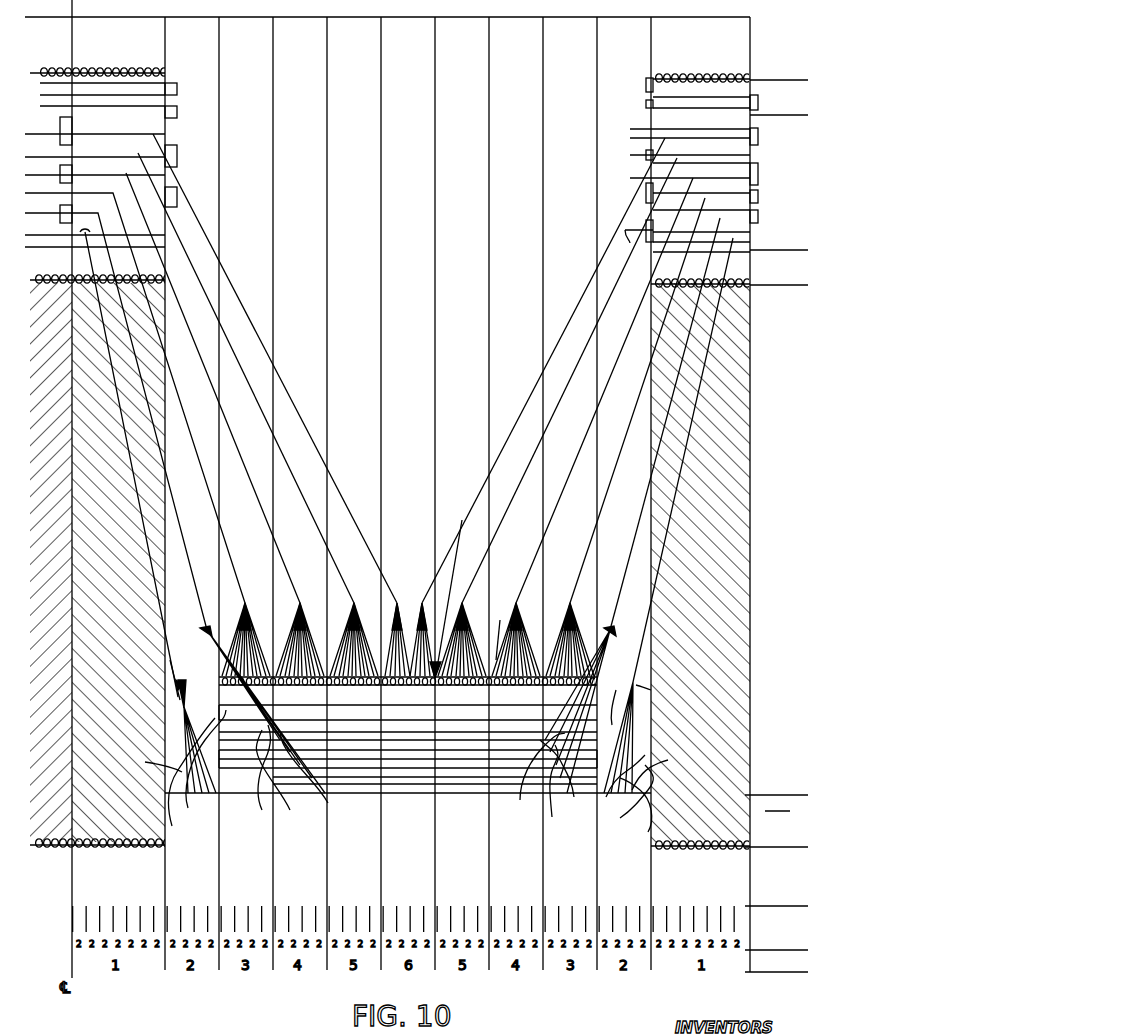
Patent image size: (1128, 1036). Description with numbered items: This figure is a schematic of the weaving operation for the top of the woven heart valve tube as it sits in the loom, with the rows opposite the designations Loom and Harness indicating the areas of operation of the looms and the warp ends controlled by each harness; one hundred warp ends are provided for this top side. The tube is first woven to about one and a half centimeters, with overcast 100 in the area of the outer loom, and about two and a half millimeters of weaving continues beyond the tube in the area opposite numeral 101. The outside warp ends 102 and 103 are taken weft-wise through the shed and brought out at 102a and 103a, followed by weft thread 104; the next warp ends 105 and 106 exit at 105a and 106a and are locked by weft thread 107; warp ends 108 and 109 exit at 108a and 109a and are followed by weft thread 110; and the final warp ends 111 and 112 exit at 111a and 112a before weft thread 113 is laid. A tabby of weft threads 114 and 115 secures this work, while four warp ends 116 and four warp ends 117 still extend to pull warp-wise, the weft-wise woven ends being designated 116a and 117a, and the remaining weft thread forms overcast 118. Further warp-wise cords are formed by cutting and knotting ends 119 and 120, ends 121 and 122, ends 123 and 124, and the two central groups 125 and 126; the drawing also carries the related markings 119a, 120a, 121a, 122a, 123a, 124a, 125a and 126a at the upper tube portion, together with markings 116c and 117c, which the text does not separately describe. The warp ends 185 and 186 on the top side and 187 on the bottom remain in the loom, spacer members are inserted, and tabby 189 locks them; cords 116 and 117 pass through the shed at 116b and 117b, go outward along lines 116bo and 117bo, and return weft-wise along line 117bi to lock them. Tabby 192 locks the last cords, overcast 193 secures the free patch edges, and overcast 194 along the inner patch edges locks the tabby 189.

The overcast 100 is at (668, 850).
The extension weaving area 101 is at (776, 883).
The outside warp end 102 is at (191, 781).
The exit point of warp end 102 102a is at (563, 792).
The outside warp end 103 is at (636, 812).
The exit point of warp end 103 103a is at (287, 777).
The weft thread 104 is at (565, 777).
The next outside warp end 105 is at (206, 767).
The exit point of warp end 105 105a is at (529, 781).
The next outside warp end 106 is at (626, 798).
The exit point of warp end 106 106a is at (250, 775).
The weft thread 107 is at (622, 783).
The warp end 108 is at (150, 762).
The exit point of warp end 108 108a is at (548, 738).
The warp end 109 is at (662, 770).
The exit point of warp end 109 109a is at (323, 773).
The weft thread 110 is at (633, 682).
The final warp end 111 is at (208, 725).
The exit point of warp end 111 111a is at (540, 712).
The final warp end 112 is at (617, 699).
The exit point of warp end 112 112a is at (270, 710).
The weft thread 113 is at (390, 700).
The weft thread 114 is at (450, 695).
The weft thread 115 is at (502, 629).
The warp ends 116 is at (182, 685).
The weft-wise woven warp ends 116a is at (203, 632).
The passage of cord 116 116b is at (85, 236).
The outward line of cord 116 116bo is at (90, 235).
The yarn 116c is at (97, 214).
The warp ends 117 is at (651, 690).
The weft-wise woven warp ends 117a is at (640, 612).
The passage of cord 117 117b is at (733, 238).
The inward line of cord 117 117bi is at (630, 243).
The outward line of cord 117 117bo is at (745, 232).
The yarn 117c is at (720, 218).
The overcast 118 is at (436, 660).
The warp ends 119 is at (245, 602).
The tube 119a is at (110, 194).
The warp ends 120 is at (570, 602).
The tube 120a is at (705, 198).
The warp ends 121 is at (300, 602).
The tube 121a is at (128, 174).
The warp ends 122 is at (516, 602).
The tube 122a is at (693, 178).
The warp ends 123 is at (354, 602).
The tube 123a is at (140, 153).
The warp ends 124 is at (462, 602).
The tube 124a is at (677, 158).
The group of warp ends 125 is at (397, 602).
The tube 125a is at (158, 134).
The group of warp ends 126 is at (422, 602).
The tube 126a is at (665, 138).
The warp ends 185 is at (735, 537).
The warp ends 186 is at (126, 527).
The warp ends 187 is at (51, 562).
The tabby 189 is at (778, 290).
The tabby 192 is at (779, 75).
The overcast 193 is at (706, 74).
The overcast 194 is at (740, 300).